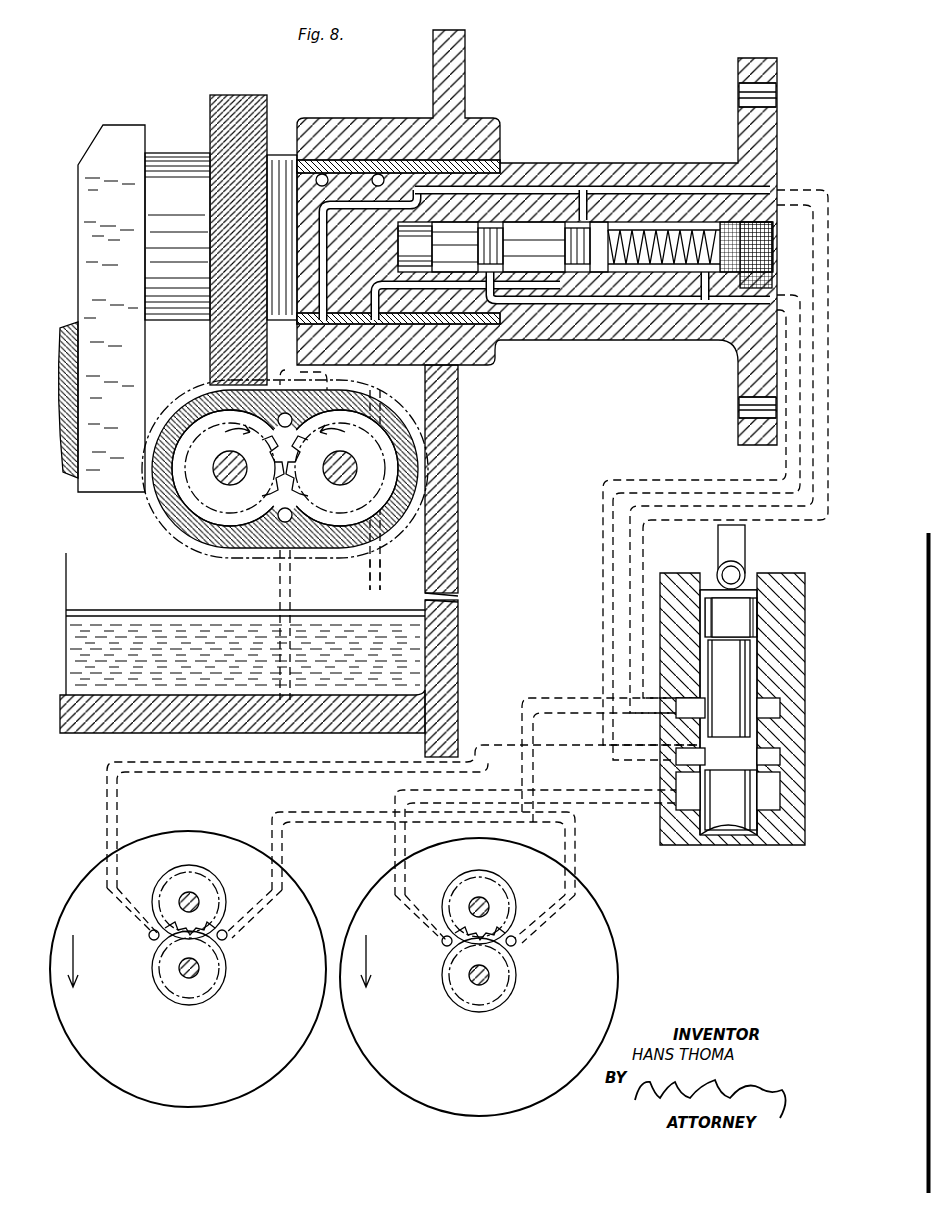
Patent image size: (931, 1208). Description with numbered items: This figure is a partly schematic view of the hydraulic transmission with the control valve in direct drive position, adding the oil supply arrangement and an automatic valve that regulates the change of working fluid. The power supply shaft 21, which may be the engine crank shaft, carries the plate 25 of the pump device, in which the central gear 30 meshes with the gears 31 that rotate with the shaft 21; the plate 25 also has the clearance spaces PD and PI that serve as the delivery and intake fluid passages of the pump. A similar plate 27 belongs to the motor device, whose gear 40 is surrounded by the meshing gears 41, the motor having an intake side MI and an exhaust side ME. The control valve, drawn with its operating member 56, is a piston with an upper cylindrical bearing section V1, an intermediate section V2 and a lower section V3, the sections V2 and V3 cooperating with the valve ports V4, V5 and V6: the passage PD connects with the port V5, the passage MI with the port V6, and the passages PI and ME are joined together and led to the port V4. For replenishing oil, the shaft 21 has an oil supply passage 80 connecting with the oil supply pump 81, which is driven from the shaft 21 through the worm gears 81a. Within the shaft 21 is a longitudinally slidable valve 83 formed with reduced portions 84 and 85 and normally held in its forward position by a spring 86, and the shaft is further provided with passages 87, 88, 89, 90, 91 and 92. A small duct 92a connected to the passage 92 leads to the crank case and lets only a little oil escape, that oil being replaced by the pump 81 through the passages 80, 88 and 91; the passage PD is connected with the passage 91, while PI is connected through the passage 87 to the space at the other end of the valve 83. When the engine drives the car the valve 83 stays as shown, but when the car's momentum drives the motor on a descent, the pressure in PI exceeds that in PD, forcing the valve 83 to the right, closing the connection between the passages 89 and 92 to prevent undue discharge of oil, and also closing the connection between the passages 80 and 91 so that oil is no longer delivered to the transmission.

The power supply shaft 21 is at (163, 160).
The oil supply passage 80 is at (345, 205).
The passage 87 is at (517, 188).
The longitudinally slidable valve 83 is at (540, 222).
The reduced portion 84 is at (503, 244).
The passage 89 is at (580, 200).
The reduced portion 85 is at (600, 230).
The spring 86 is at (700, 230).
The oil supply pump 81 is at (305, 465).
The worm gears 81a is at (200, 400).
The passage 92 is at (555, 295).
The passage 88 is at (618, 302).
The passage 90 is at (710, 302).
The passage 91 is at (738, 350).
The duct 92a is at (378, 562).
The control valve rod 56 is at (745, 542).
The upper cylindrical bearing section V1 is at (731, 617).
The intermediate section V2 is at (716, 720).
The lower section V3 is at (731, 800).
The valve port V4 is at (728, 708).
The valve port V5 is at (728, 757).
The valve port V6 is at (728, 791).
The plate 25 is at (125, 1075).
The gears 31 is at (182, 890).
The central gear 30 is at (170, 962).
The clearance space PD is at (152, 938).
The clearance space PI is at (227, 938).
The plate 27 is at (408, 1075).
The gears 41 is at (475, 892).
The gear 40 is at (480, 996).
The motor intake MI is at (445, 945).
The motor exhaust ME is at (516, 944).